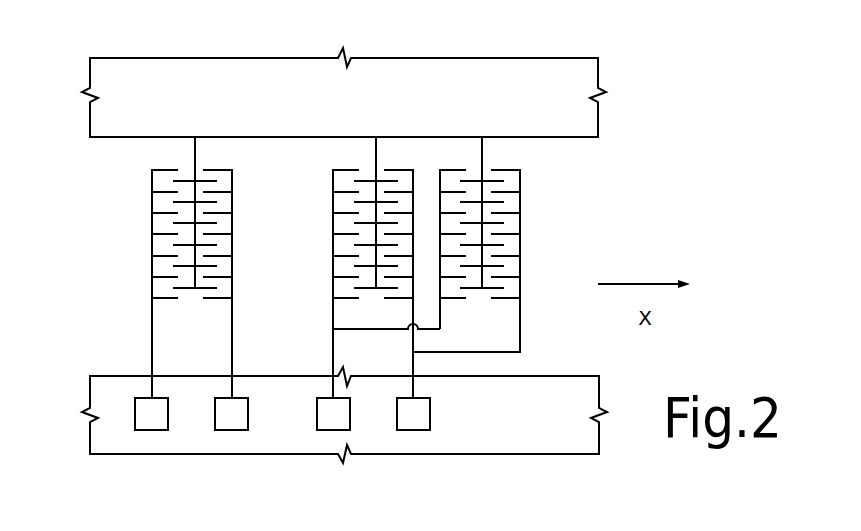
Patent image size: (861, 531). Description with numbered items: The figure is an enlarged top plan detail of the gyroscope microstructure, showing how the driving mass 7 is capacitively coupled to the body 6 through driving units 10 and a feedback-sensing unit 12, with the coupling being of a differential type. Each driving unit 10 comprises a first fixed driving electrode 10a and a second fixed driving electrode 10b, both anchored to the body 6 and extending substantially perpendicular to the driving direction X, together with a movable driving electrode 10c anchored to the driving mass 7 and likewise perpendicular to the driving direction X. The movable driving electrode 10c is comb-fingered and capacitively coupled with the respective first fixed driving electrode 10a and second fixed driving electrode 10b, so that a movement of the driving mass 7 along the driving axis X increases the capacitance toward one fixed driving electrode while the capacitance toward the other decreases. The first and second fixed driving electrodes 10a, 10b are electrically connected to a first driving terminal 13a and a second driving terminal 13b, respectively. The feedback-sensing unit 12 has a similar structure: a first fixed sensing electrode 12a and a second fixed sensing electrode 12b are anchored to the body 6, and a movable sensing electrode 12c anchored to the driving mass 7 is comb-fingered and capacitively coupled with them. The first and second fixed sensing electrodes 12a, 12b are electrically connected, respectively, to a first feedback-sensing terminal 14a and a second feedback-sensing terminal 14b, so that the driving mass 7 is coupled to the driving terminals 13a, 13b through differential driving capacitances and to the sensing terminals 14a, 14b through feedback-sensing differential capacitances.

The driving mass 7 is at (482, 62).
The body 6 is at (535, 453).
The driving unit 10 is at (446, 267).
The first fixed driving electrode 10a is at (333, 297).
The second fixed driving electrode 10b is at (413, 314).
The movable driving electrode 10c is at (377, 155).
The feedback-sensing unit 12 is at (167, 267).
The first fixed sensing electrode 12a is at (152, 343).
The second fixed sensing electrode 12b is at (232, 258).
The movable sensing electrode 12c is at (195, 155).
The first driving terminal 13a is at (328, 432).
The second driving terminal 13b is at (415, 432).
The first feedback-sensing terminal 14a is at (145, 432).
The second feedback-sensing terminal 14b is at (232, 432).